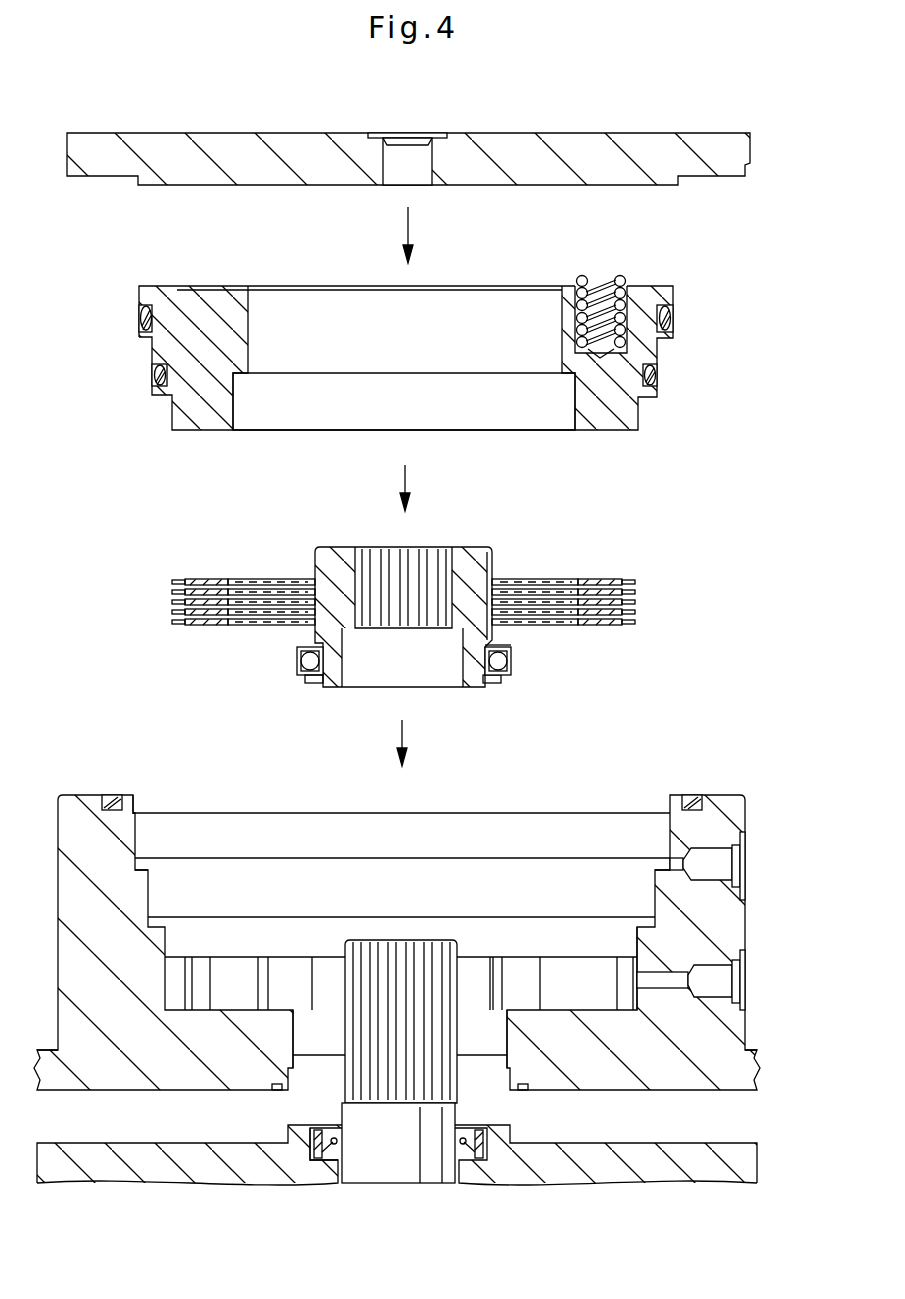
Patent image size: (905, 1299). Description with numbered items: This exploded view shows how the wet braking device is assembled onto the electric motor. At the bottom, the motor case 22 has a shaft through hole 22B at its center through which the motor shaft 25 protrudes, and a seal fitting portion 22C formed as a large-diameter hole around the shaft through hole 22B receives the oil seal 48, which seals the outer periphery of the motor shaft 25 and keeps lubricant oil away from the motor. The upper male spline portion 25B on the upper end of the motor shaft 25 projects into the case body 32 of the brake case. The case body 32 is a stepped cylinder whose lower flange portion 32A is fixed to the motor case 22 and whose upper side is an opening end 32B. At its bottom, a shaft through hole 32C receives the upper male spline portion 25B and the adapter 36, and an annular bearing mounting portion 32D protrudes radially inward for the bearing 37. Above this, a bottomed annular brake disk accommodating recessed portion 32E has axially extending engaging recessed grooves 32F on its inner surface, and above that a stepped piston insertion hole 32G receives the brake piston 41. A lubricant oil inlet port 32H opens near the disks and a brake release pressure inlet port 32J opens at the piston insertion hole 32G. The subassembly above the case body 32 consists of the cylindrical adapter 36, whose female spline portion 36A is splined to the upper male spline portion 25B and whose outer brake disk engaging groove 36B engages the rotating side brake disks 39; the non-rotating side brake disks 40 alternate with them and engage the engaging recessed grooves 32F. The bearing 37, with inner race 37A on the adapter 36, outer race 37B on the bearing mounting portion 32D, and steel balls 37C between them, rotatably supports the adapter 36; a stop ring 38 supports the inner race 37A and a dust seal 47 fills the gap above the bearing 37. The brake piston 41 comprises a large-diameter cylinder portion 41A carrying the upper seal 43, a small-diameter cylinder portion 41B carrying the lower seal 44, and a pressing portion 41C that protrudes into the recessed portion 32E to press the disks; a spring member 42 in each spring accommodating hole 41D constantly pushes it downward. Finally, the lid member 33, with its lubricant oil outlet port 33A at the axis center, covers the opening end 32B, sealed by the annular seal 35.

The lid member 33 is at (408, 119).
The lubricant oil outlet port 33A is at (412, 158).
The brake piston 41 is at (406, 329).
The large-diameter cylinder portion 41A is at (660, 298).
The small-diameter cylinder portion 41B is at (650, 356).
The pressing portion 41C is at (612, 420).
The spring accommodating hole 41D is at (610, 318).
The spring member 42 is at (582, 284).
The upper seal 43 is at (147, 318).
The lower seal 44 is at (158, 372).
The adapter 36 is at (427, 603).
The female spline portion 36A is at (375, 585).
The brake disk engaging groove 36B is at (493, 570).
The bearing 37 is at (559, 676).
The inner race 37A is at (312, 683).
The outer race 37B is at (298, 652).
The steel balls 37C is at (505, 668).
The stop ring 38 is at (495, 681).
The rotating side brake disks 39 is at (238, 590).
The non-rotating side brake disks 40 is at (597, 582).
The dust seal 47 is at (497, 645).
The case body 32 is at (426, 973).
The lower flange portion 32A is at (748, 1085).
The opening end 32B is at (308, 805).
The shaft through hole 32C is at (300, 1045).
The bearing mounting portion 32D is at (495, 1050).
The brake disk accommodating recessed portion 32E is at (640, 942).
The engaging recessed grooves 32F is at (203, 978).
The piston insertion hole 32G is at (138, 838).
The lubricant oil inlet port 32H is at (713, 982).
The brake release pressure inlet port 32J is at (713, 865).
The annular seal 35 is at (692, 796).
The motor shaft 25 is at (413, 1150).
The upper male spline portion 25B is at (413, 975).
The motor case 22 is at (397, 1185).
The shaft through hole 22B is at (343, 1148).
The seal fitting portion 22C is at (465, 1160).
The oil seal 48 is at (316, 1150).